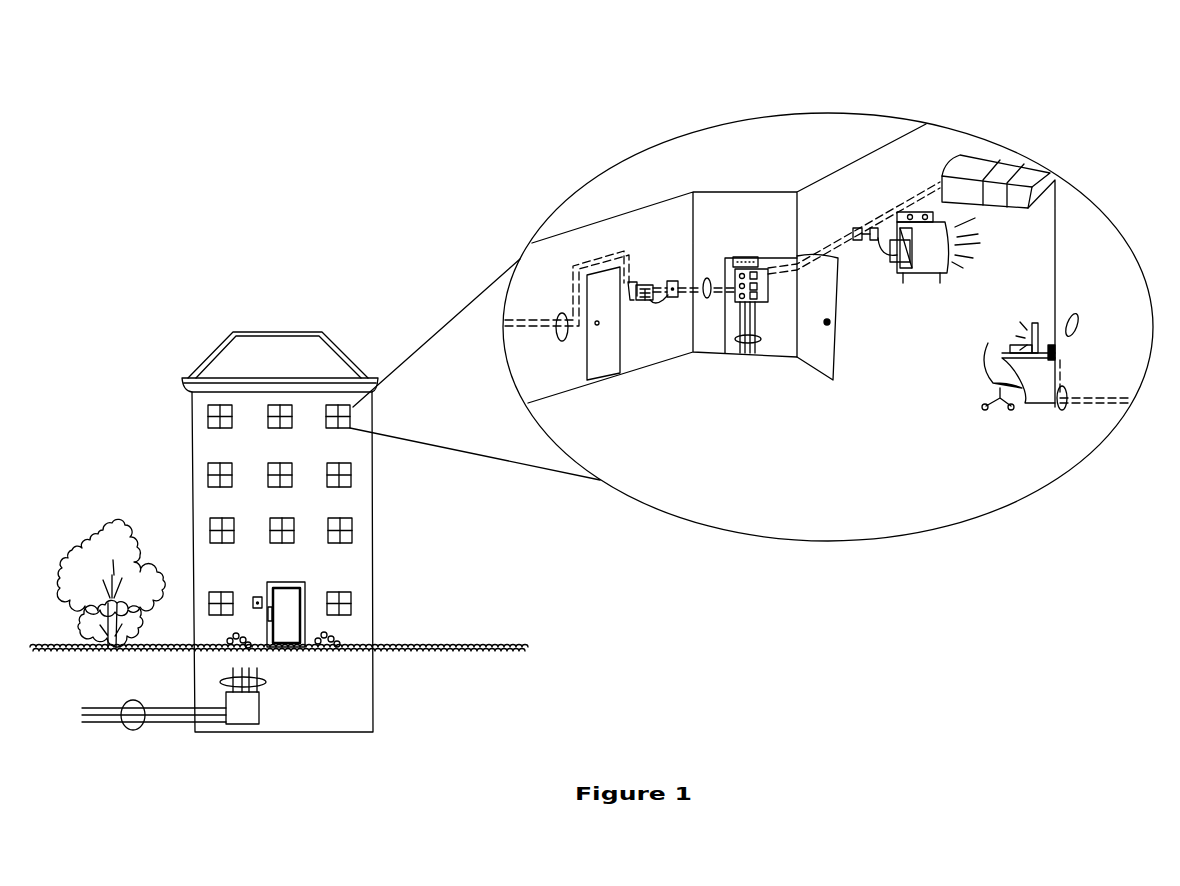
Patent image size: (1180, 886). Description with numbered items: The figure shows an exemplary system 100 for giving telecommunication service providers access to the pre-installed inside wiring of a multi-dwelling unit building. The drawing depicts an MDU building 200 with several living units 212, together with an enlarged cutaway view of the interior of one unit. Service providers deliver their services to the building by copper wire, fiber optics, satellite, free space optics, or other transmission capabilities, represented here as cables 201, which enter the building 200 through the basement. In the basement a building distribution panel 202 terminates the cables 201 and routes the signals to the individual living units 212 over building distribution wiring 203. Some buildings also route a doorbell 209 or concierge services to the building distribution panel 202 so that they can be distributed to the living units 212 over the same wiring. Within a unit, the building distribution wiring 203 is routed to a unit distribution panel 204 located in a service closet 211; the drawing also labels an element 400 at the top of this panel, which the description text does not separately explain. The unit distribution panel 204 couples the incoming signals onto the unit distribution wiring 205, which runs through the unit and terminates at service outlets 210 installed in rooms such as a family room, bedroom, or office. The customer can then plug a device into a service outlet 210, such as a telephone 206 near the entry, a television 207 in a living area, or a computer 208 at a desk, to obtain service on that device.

The system 100 is at (919, 41).
The MDU building 200 is at (267, 332).
The cables 201 is at (125, 728).
The building distribution panel 202 is at (260, 708).
The building distribution wiring 203 is at (225, 686).
The unit distribution panel 204 is at (768, 290).
The unit distribution wiring 205 is at (562, 341).
The telephone 206 is at (646, 276).
The television 207 is at (940, 186).
The computer 208 is at (1034, 323).
The doorbell 209 is at (257, 597).
The service outlets 210 is at (672, 281).
The service closet 211 is at (727, 258).
The living units 212 is at (335, 428).
The distribution panel 400 is at (750, 257).